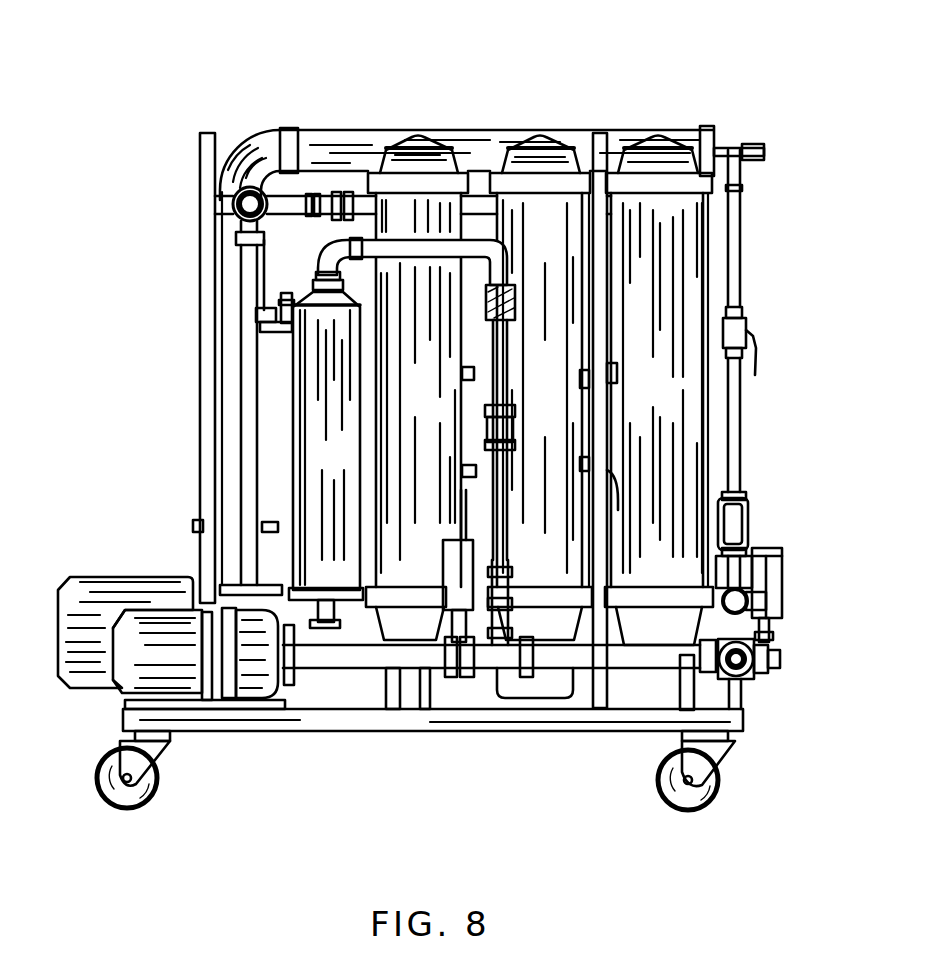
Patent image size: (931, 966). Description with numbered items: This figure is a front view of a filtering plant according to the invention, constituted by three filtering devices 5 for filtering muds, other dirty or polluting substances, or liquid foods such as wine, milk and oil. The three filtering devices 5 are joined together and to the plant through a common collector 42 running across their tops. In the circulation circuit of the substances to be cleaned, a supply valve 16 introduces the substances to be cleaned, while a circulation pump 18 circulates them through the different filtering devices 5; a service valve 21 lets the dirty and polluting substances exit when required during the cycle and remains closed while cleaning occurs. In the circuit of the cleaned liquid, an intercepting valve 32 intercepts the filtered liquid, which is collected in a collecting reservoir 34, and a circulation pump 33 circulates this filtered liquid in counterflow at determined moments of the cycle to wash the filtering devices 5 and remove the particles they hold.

The filtering device 5 is at (421, 207).
The supply valve 16 is at (768, 578).
The circulation pump 18 is at (88, 580).
The service valve 21 is at (737, 518).
The intercepting valve 32 is at (235, 278).
The circulation pump 33 is at (250, 648).
The collecting reservoir 34 is at (322, 408).
The common collector 42 is at (354, 147).